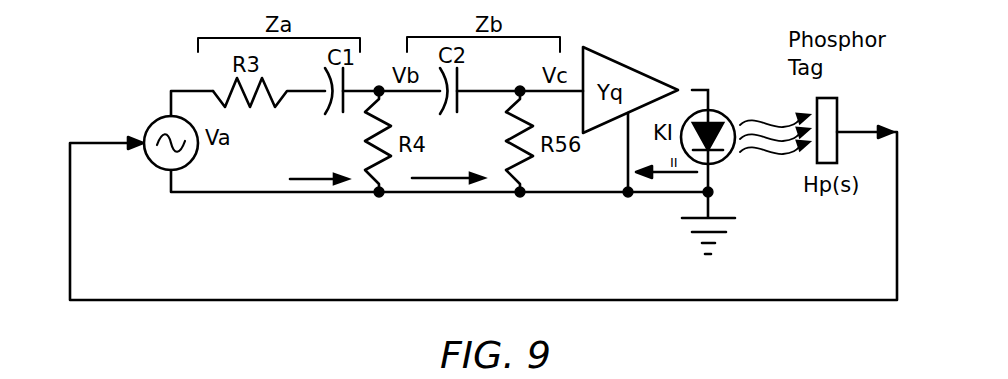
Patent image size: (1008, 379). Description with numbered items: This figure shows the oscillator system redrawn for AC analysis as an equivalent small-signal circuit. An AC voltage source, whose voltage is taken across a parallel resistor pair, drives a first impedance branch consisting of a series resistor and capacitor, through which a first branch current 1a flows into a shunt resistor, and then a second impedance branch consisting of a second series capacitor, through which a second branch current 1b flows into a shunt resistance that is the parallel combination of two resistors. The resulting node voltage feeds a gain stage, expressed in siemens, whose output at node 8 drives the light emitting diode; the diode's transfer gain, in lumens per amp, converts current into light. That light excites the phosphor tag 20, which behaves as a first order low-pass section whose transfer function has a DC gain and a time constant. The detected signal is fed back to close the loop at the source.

The light emitting diode excitation source 8 is at (741, 132).
The latent illuminance marker, or tag 20 is at (840, 112).
The current through Za branch 1a is at (319, 170).
The current through Zb branch 1b is at (448, 169).